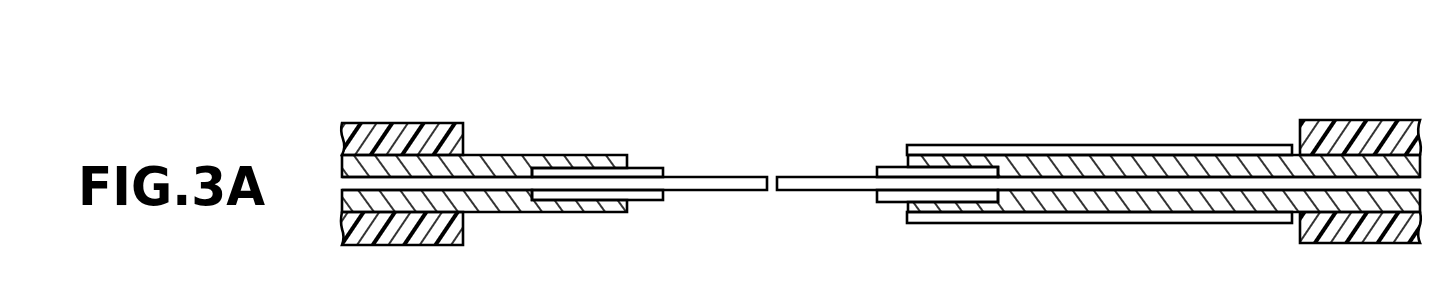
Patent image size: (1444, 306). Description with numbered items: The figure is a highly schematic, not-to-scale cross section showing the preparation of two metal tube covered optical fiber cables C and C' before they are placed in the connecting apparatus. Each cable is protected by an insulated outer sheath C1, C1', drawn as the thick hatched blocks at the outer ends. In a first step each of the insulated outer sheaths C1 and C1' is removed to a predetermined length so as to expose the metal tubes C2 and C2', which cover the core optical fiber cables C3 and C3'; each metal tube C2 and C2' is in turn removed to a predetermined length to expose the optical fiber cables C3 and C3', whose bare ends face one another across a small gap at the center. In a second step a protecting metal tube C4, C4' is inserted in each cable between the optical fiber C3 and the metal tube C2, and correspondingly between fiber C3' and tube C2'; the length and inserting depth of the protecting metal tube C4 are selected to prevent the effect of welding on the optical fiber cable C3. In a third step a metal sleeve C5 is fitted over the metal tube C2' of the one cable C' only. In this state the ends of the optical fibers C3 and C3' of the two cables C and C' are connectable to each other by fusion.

The metal tube covered optical fiber cable C is at (556, 131).
The insulated outer sheath C1 is at (450, 159).
The metal tube C2 is at (487, 143).
The core optical fiber cable C3 is at (556, 132).
The protecting metal tube C4 is at (613, 137).
The metal tube covered optical fiber cable C' is at (1099, 133).
The insulated outer sheath C1' is at (1325, 158).
The metal tube C2' is at (1164, 143).
The core optical fiber cable C3' is at (1098, 132).
The protecting metal tube C4' is at (937, 138).
The metal sleeve C5 is at (1122, 145).